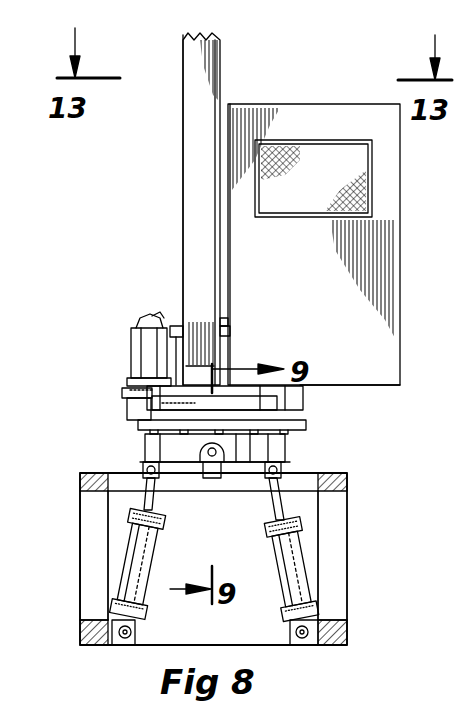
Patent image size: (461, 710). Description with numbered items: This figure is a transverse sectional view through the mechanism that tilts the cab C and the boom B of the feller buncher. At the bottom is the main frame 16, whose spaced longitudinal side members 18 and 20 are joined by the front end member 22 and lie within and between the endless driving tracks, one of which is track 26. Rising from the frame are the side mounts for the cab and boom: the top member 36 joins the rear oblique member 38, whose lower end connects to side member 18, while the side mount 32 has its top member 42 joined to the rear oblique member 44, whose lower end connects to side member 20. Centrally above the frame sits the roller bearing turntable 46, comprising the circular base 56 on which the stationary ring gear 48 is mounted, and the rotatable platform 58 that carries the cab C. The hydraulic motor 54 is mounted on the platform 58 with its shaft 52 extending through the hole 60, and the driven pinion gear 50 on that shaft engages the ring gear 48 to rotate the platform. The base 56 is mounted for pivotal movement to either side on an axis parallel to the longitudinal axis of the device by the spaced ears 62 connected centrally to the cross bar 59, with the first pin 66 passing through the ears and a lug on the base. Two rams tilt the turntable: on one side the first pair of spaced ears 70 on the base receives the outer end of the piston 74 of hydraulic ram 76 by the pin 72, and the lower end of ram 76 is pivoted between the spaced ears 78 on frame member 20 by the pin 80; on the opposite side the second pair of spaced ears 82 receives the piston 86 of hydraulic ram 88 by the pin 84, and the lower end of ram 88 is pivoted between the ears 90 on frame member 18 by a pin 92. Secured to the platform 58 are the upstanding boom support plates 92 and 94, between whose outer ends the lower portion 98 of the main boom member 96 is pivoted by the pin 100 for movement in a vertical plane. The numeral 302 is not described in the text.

The boom B is at (226, 60).
The cab C is at (346, 102).
The main boom member 96 is at (183, 142).
The lower portion 98 is at (183, 178).
The boom support plate / pin 92 is at (176, 326).
The boom support plate 94 is at (228, 320).
The pin 100 is at (230, 331).
The hydraulic motor 54 is at (131, 336).
The hole 60 is at (131, 366).
The shaft 52 is at (122, 393).
The driven pinion gear 50 is at (127, 412).
The roller bearing turntable 46 is at (303, 410).
The rotatable platform 58 is at (382, 388).
The stationary ring gear 48 is at (214, 403).
The circular base 56 is at (296, 428).
The cross bar 59 is at (215, 448).
The spaced ears 62 is at (219, 478).
The second pair of spaced ears 82 is at (143, 462).
The pin 84 is at (147, 470).
The first pair of spaced ears 70 is at (281, 466).
The pin 72 is at (281, 474).
The side mount 32 is at (217, 563).
The top member 36 is at (80, 495).
The top member 42 is at (347, 496).
The longitudinal side member 18 is at (80, 640).
The longitudinal side member 20 is at (347, 618).
The rear oblique member 38 is at (85, 598).
The rear oblique member 44 is at (340, 528).
The frame side wall 302 is at (80, 566).
The hydraulic ram 88 is at (154, 552).
The first pin 66 is at (155, 488).
The piston 86 is at (153, 520).
The spaced ears 90 is at (118, 646).
The hydraulic ram 76 is at (273, 550).
The piston 74 is at (274, 505).
The spaced ears 78 is at (306, 646).
The pin 80 is at (296, 632).
The main frame 16 is at (460, 425).
The endless driving track 26 is at (460, 462).
The front end member 22 is at (450, 498).